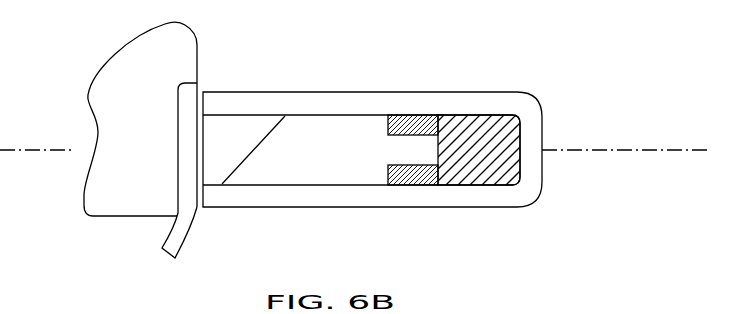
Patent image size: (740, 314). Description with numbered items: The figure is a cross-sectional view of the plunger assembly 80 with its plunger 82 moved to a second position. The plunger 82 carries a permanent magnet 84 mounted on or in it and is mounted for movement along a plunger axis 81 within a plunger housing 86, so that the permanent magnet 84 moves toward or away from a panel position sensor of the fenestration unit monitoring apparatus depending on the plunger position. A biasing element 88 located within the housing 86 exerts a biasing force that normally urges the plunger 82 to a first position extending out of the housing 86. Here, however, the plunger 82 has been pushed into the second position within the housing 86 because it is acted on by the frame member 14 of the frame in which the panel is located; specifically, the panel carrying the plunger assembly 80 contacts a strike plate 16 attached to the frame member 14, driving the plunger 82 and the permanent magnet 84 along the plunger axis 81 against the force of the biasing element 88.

The frame member 14 is at (121, 161).
The strike plate 16 is at (188, 159).
The plunger assembly 80 is at (571, 84).
The plunger axis 81 is at (647, 149).
The plunger 82 is at (315, 145).
The permanent magnet 84 is at (420, 120).
The plunger housing 86 is at (252, 108).
The biasing element 88 is at (480, 142).